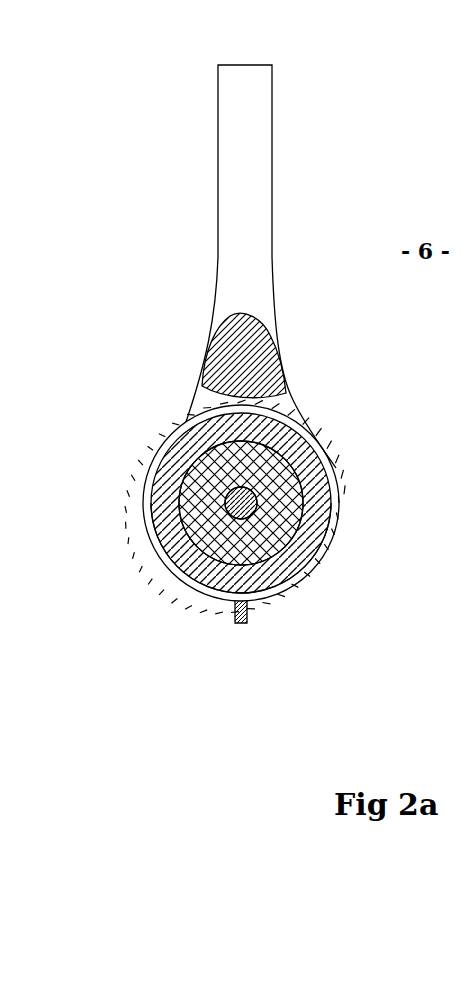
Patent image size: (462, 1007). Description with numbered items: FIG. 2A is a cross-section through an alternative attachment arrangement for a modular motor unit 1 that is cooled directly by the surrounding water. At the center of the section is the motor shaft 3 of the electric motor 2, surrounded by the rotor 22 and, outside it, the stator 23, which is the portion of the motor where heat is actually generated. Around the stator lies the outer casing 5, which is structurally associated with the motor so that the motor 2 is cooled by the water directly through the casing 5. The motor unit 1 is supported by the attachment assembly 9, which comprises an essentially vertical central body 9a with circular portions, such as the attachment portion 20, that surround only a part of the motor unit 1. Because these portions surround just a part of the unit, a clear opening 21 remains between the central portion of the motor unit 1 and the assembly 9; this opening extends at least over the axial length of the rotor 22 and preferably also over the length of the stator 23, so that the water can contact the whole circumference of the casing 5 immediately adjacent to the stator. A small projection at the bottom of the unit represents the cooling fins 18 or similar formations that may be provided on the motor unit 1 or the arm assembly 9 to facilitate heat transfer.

The modular motor unit 1 is at (325, 590).
The electric motor 2 is at (348, 487).
The motor shaft 3 is at (258, 507).
The outer casing 5 is at (193, 422).
The attachment assembly 9 is at (164, 386).
The central body 9a is at (240, 170).
The cooling fins 18 is at (233, 622).
The attachment portion 20 is at (167, 432).
The opening 21 is at (287, 395).
The rotor 22 is at (202, 530).
The stator 23 is at (202, 593).